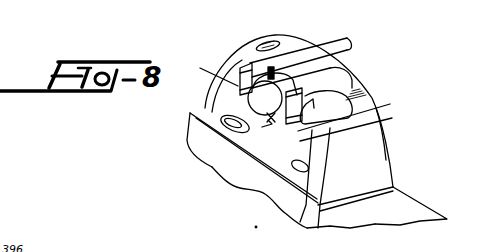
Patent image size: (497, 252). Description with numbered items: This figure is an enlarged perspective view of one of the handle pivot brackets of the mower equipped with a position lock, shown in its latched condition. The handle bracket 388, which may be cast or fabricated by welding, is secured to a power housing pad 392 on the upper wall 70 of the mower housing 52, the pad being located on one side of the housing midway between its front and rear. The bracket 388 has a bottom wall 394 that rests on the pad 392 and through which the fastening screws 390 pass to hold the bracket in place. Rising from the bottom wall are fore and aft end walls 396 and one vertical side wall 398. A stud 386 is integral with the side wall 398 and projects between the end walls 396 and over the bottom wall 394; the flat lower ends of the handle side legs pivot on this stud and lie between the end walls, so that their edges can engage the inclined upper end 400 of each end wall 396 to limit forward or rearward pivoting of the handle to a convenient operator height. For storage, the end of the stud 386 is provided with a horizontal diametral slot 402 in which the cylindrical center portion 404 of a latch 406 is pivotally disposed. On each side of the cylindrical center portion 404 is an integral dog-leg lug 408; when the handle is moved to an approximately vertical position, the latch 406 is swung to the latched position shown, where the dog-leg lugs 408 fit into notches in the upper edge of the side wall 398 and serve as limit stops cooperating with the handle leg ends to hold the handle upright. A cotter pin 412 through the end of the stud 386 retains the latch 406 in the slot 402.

The mower housing 52 is at (440, 211).
The upper wall 70 is at (337, 228).
The stud 386 is at (324, 56).
The handle bracket 388 is at (385, 138).
The fastening screws 390 is at (207, 160).
The power housing pad 392 is at (393, 189).
The bottom wall 394 is at (243, 187).
The end walls 396 is at (212, 82).
The side wall 398 is at (325, 55).
The inclined upper end 400 is at (236, 62).
The horizontal diametral slot 402 is at (207, 108).
The cylindrical center portion 404 is at (241, 129).
The latch 406 is at (290, 162).
The dog-leg lug 408 is at (304, 50).
The cotter pin 412 is at (273, 67).